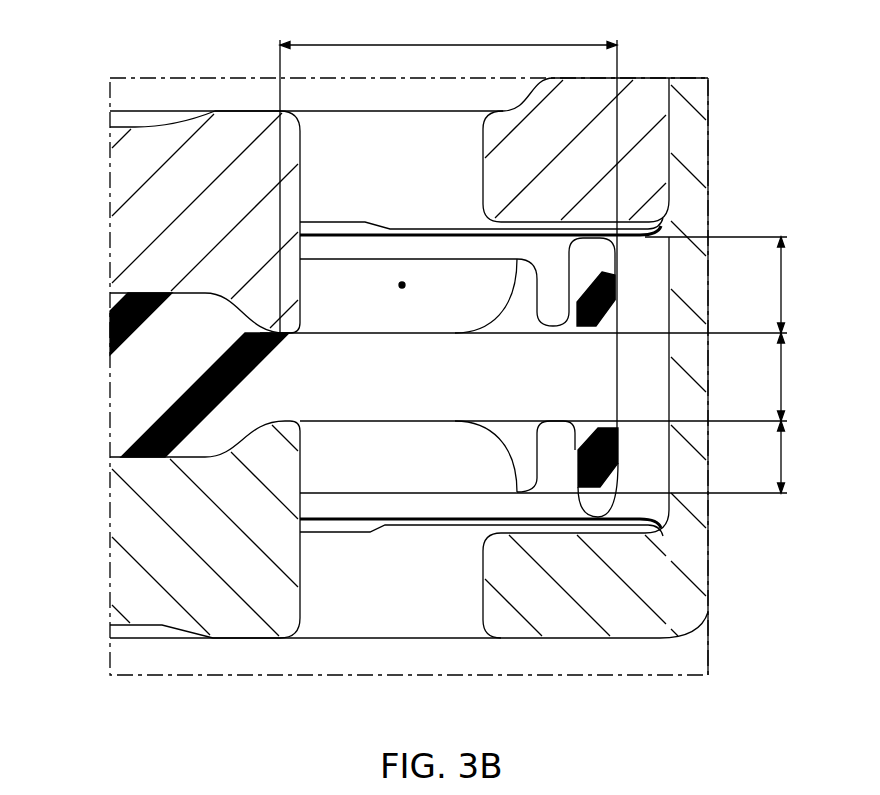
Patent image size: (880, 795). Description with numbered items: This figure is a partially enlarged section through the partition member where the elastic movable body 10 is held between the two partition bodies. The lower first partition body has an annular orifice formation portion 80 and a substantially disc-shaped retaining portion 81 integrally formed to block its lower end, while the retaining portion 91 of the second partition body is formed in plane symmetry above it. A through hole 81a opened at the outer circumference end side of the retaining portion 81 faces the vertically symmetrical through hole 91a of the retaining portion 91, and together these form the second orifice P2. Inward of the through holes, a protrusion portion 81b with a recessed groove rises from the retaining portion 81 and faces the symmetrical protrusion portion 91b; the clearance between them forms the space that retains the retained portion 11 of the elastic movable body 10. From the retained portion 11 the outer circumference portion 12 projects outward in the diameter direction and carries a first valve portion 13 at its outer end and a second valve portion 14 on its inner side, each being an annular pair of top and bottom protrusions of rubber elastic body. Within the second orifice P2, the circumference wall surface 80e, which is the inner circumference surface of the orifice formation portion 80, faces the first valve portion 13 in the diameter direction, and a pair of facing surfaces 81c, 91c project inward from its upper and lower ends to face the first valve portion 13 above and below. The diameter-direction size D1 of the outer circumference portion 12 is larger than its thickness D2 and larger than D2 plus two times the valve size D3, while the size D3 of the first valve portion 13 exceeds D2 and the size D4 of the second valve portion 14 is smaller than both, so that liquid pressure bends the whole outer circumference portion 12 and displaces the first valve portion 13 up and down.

The elastic movable body 10 is at (633, 280).
The retained portion 11 is at (135, 386).
The outer circumference portion 12 is at (333, 353).
The first valve portion 13 is at (602, 272).
The second valve portion 14 is at (517, 280).
The orifice formation portion 80 is at (687, 475).
The circumference wall surface 80e is at (651, 375).
The retaining portion 81 is at (540, 593).
The through hole 81a is at (305, 600).
The protrusion portion 81b is at (155, 477).
The facing surface 81c is at (555, 520).
The retaining portion 91 is at (650, 147).
The through hole 91a is at (300, 173).
The protrusion portion 91b is at (155, 273).
The facing surface 91c is at (648, 245).
The second orifice P2 is at (402, 282).
The size in the diameter direction of the outer circumference portion D1 is at (448, 43).
The size of the outer circumference portion in the up and down direction D2 is at (783, 377).
The size of the first valve portion in the up and down direction D3 is at (783, 283).
The size of the second valve portion in the up and down direction D4 is at (783, 458).